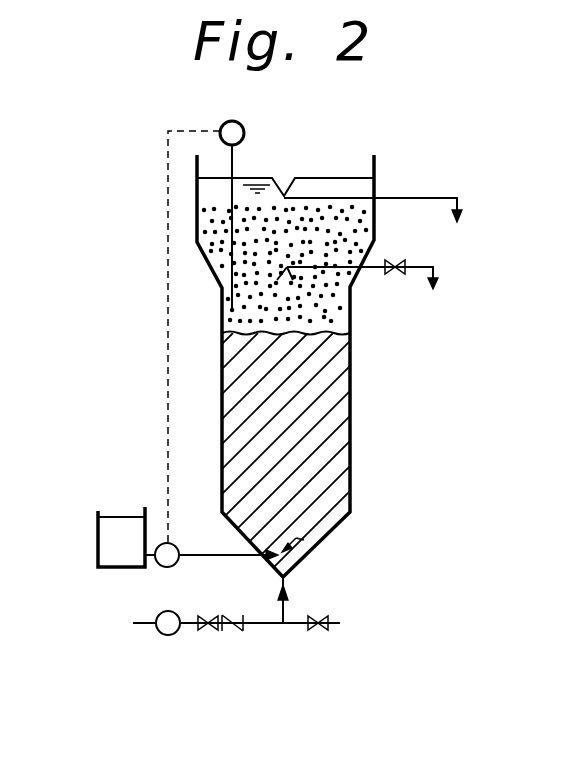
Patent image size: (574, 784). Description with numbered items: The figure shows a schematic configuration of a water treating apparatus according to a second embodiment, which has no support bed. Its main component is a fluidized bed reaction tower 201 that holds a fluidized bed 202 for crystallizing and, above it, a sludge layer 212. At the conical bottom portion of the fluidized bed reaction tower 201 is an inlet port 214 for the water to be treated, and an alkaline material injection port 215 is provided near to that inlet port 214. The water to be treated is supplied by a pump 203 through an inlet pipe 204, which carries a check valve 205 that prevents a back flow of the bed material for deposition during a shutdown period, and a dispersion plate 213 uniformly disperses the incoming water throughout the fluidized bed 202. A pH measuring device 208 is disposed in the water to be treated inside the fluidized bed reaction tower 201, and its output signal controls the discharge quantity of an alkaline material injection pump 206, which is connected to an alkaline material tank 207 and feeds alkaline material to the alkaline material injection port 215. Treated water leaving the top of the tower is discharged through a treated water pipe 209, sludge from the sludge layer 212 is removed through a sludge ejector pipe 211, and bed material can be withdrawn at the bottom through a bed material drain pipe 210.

The fluidized bed reaction tower 201 is at (350, 370).
The fluidized bed 202 is at (328, 439).
The pump of the water to be treated 203 is at (170, 636).
The inlet pipe for the water to be treated 204 is at (140, 621).
The check valve 205 is at (208, 631).
The alkaline material injection pump 206 is at (163, 542).
The alkaline material tank 207 is at (126, 522).
The pH measuring device 208 is at (245, 131).
The treated water pipe 209 is at (433, 172).
The bed material drain pipe 210 is at (317, 616).
The sludge ejector pipe 211 is at (397, 273).
The sludge layer 212 is at (363, 222).
The dispersion plate 213 is at (300, 540).
The inlet port for the water to be treated 214 is at (287, 577).
The alkaline material injection port 215 is at (272, 568).